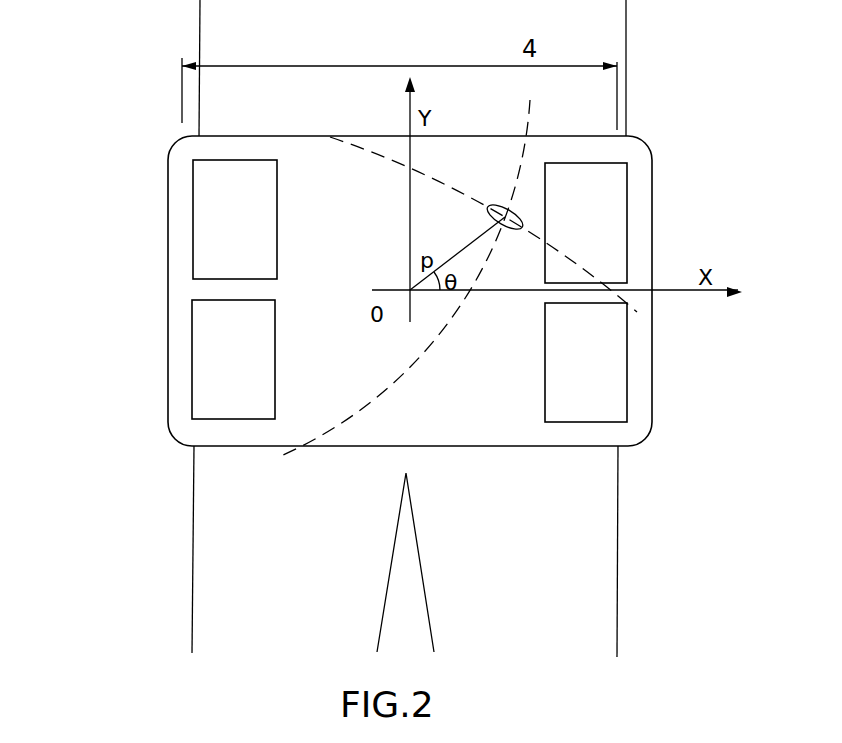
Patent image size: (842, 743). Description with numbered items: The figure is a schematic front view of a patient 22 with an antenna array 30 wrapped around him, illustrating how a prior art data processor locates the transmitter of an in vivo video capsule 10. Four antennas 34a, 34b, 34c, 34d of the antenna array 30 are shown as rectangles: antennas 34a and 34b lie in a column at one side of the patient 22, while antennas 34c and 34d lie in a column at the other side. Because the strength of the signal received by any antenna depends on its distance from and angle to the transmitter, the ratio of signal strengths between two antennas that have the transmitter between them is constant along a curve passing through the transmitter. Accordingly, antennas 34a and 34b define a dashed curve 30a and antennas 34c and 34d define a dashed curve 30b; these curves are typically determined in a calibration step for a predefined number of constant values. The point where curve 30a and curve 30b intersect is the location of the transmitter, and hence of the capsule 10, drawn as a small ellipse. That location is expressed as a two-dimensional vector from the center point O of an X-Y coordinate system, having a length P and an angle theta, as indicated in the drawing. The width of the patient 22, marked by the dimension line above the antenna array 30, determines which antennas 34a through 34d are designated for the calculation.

The capsule 10 is at (652, 166).
The patient 22 is at (208, 548).
The antenna array 30 is at (288, 150).
The curve 30a is at (645, 317).
The curve 30b is at (392, 383).
The antenna 34a is at (627, 223).
The antenna 34b is at (192, 220).
The antenna 34c is at (190, 358).
The antenna 34d is at (627, 363).